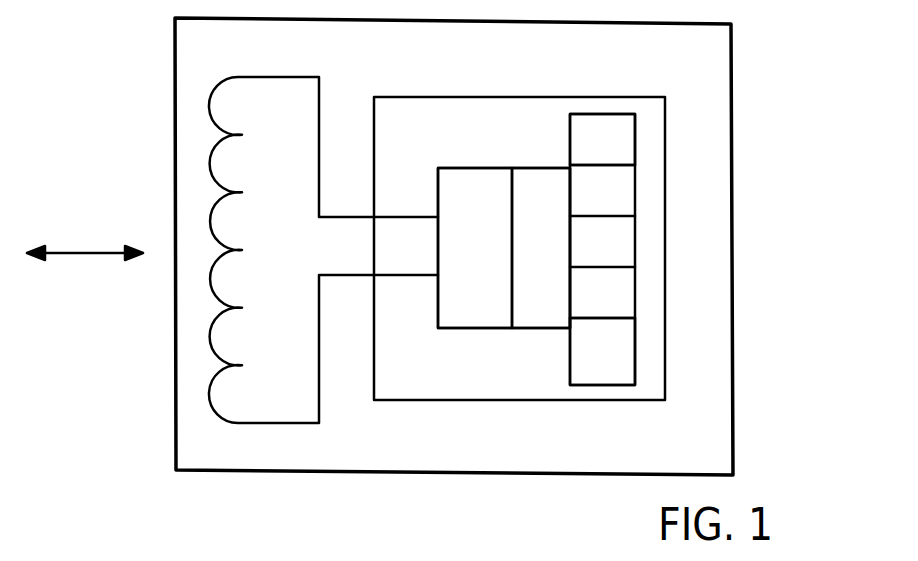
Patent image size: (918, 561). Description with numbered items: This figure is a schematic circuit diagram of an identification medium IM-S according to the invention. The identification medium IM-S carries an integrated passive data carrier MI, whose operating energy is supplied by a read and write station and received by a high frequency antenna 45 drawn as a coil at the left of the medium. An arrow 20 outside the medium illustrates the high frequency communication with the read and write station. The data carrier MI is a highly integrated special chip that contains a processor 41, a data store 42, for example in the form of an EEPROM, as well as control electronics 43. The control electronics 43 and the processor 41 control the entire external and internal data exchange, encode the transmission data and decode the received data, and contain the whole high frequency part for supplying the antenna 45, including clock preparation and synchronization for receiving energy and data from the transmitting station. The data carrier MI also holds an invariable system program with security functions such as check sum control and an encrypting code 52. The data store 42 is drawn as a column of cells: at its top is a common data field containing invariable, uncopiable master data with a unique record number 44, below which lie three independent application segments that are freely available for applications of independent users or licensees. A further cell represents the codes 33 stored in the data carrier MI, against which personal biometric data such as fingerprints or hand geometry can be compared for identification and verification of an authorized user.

The identification medium IM-S is at (731, 52).
The integrated passive data carrier MI is at (632, 97).
The high frequency antenna 45 is at (213, 330).
The arrow 20 is at (90, 251).
The control electronics 43 is at (475, 328).
The encrypting code 52 is at (478, 193).
The processor 41 is at (548, 328).
The data store 42 is at (607, 363).
The unique record number 44 is at (627, 152).
The stored codes 33 is at (617, 342).